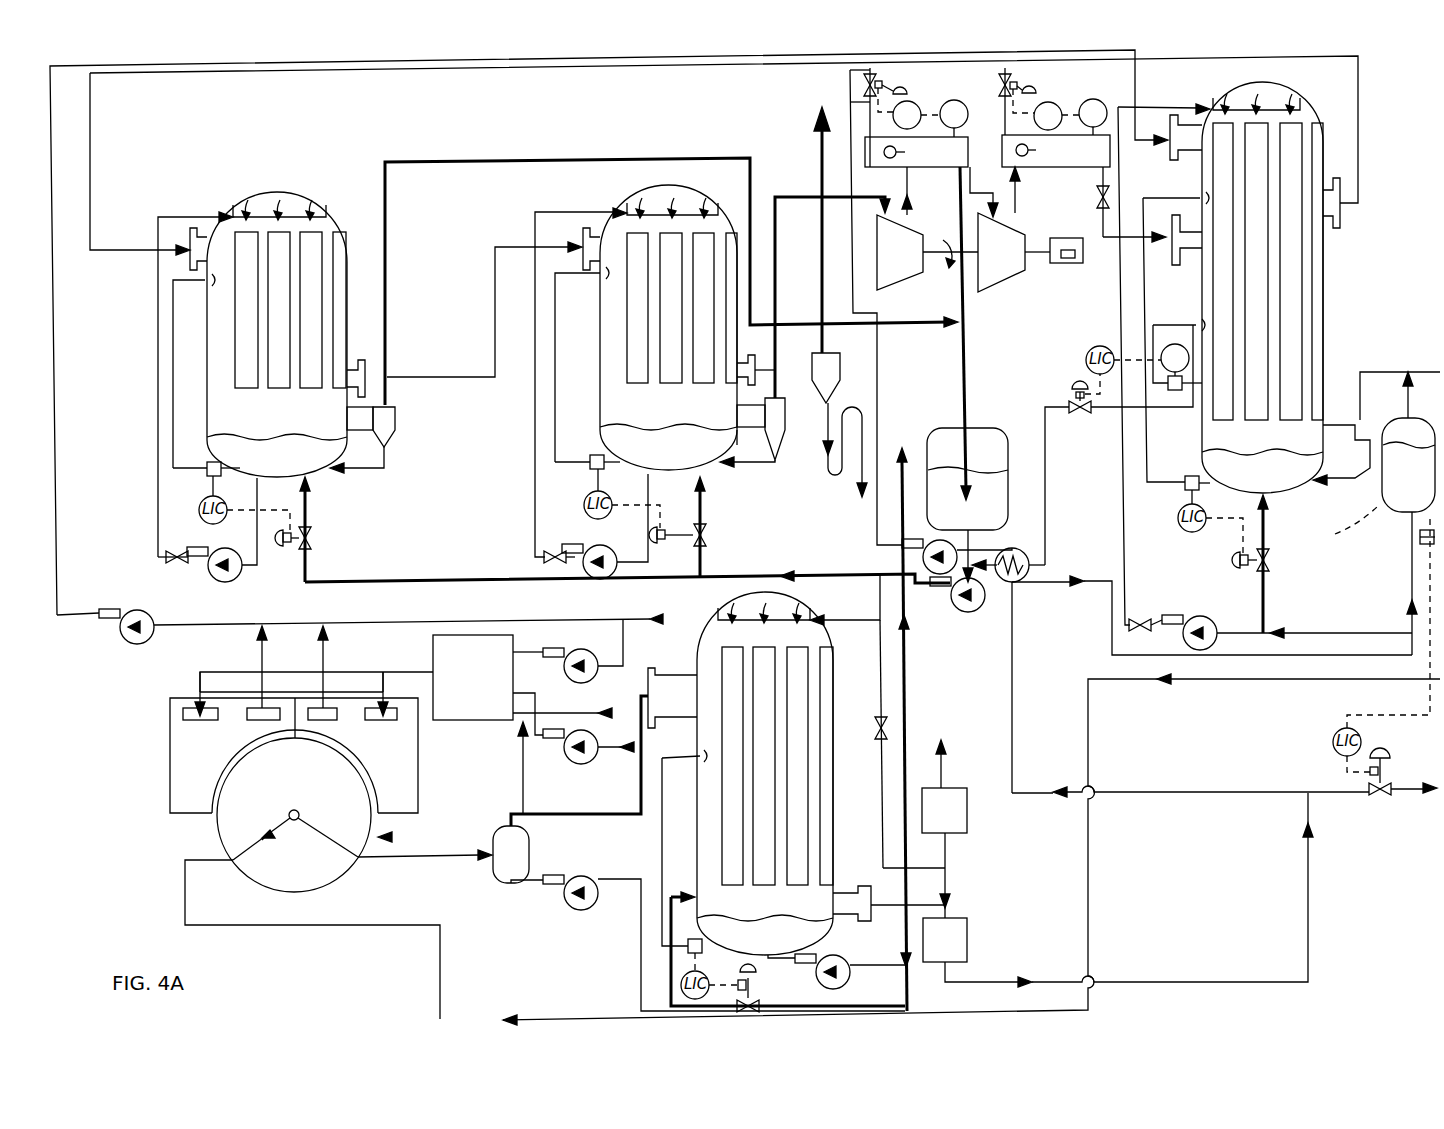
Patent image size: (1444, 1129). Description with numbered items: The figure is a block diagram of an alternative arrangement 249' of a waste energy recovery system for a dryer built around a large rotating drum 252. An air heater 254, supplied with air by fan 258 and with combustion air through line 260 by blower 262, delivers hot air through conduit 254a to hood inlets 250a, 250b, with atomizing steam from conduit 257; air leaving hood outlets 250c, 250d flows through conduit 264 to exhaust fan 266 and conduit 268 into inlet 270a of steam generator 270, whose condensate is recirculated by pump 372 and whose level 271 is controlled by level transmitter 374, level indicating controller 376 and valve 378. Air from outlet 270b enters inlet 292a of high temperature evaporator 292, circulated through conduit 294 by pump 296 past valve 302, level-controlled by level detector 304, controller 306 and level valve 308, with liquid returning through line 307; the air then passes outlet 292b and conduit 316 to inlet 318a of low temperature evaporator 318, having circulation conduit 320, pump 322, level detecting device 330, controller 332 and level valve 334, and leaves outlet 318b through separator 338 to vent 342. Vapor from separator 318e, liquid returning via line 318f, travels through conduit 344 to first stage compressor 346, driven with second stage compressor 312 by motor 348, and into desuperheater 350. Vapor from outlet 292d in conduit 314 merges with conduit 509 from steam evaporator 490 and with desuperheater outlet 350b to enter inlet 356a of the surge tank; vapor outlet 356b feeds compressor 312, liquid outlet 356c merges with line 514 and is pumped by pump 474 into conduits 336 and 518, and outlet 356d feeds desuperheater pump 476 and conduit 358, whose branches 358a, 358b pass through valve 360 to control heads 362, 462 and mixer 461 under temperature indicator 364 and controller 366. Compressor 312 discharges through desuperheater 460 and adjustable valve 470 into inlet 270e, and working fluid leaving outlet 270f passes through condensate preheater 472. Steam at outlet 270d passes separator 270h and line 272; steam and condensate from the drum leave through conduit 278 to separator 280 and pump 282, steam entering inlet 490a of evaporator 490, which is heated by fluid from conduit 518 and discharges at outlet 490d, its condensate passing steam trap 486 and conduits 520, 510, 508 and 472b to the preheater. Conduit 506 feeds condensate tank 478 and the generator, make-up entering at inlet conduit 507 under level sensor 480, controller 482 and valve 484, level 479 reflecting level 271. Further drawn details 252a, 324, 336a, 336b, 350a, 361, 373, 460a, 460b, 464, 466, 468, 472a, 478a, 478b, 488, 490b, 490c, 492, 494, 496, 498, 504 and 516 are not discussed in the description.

The alternative arrangement 249' is at (251, 755).
The hood inlet 250a is at (200, 684).
The hood inlet 250b is at (362, 696).
The hood outlet 250c is at (242, 673).
The hood outlet 250d is at (302, 673).
The rotating drum 252 is at (393, 837).
The drum paddle 252a is at (217, 837).
The air heater 254 is at (478, 722).
The conduit 254a is at (416, 664).
The conduit 257 is at (522, 765).
The fan 258 is at (594, 655).
The combustion air line 260 is at (625, 755).
The blower 262 is at (576, 765).
The conduit 264 is at (223, 625).
The exhaust fan 266 is at (143, 615).
The conduit 268 is at (57, 531).
The steam generator 270 is at (1400, 295).
The steam generator inlet 270a is at (1147, 148).
The air outlet 270b is at (1358, 204).
The steam outlet 270d is at (1345, 403).
The steam generator inlet 270e is at (1157, 245).
The steam generator outlet 270f is at (1190, 410).
The separator 270h is at (1341, 463).
The condensate level 271 is at (1225, 451).
The steam line 272 is at (1289, 682).
The conduit 278 is at (490, 881).
The separator 280 is at (529, 852).
The pump 282 is at (562, 904).
The high temperature evaporator 292 is at (213, 173).
The evaporator inlet 292a is at (170, 255).
The evaporator outlet 292b is at (367, 345).
The outlet opening 292d is at (393, 391).
The circulation conduit 294 is at (155, 485).
The pump 296 is at (232, 582).
The valve 302 is at (170, 562).
The level detector 304 is at (213, 461).
The level indicating controller 306 is at (194, 500).
The line 307 is at (397, 455).
The level valve 308 is at (286, 547).
The second stage vapor compressor 312 is at (998, 293).
The conduit 314 is at (473, 155).
The conduit 316 is at (457, 376).
The low temperature evaporator 318 is at (599, 188).
The inlet opening 318a is at (561, 248).
The outlet opening 318b is at (753, 361).
The separator 318e is at (786, 420).
The line 318f is at (746, 470).
The circulation conduit 320 is at (535, 440).
The pump 322 is at (630, 526).
The valve 324 is at (535, 565).
The level detecting device 330 is at (598, 455).
The level indicating controller 332 is at (578, 498).
The level valve 334 is at (652, 523).
The conduit 336 is at (855, 572).
The liquid line 336a is at (418, 577).
The control valve line 336b is at (716, 538).
The separator 338 is at (839, 368).
The vent 342 is at (816, 144).
The conduit 344 is at (812, 180).
The first stage compressor 346 is at (893, 284).
The motor 348 is at (1067, 264).
The desuperheater 350 is at (928, 196).
The exhaust line 350a is at (865, 174).
The desuperheater outlet 350b is at (1016, 170).
The surge tank inlet 356a is at (961, 426).
The surge tank outlet 356b is at (983, 425).
The surge tank outlet 356c is at (1012, 548).
The surge tank outlet 356d is at (912, 504).
The conduit 358 is at (870, 525).
The branch 358a is at (851, 102).
The branch 358b is at (850, 72).
The valve 360 is at (907, 86).
The heat exchanger 361 is at (962, 170).
The control head 362 is at (870, 151).
The temperature indicator 364 is at (921, 106).
The temperature indicating controller 366 is at (956, 108).
The pump 372 is at (1195, 618).
The valve 373 is at (1143, 618).
The level transmitter 374 is at (1185, 488).
The level indicating controller 376 is at (1180, 540).
The valve 378 is at (1225, 560).
The desuperheater 460 is at (990, 161).
The exhaust line 460a is at (1018, 194).
The exhaust line 460b is at (1100, 212).
The mixer 461 is at (1093, 165).
The control head 462 is at (1015, 152).
The temperature transmitter 464 is at (1097, 99).
The temperature controller 466 is at (1059, 107).
The control valve 468 is at (1037, 80).
The adjustable valve 470 is at (1093, 239).
The condensate preheater 472 is at (1002, 588).
The condensate line 472a is at (1035, 523).
The conduit 472b is at (1014, 665).
The pump 474 is at (990, 614).
The desuperheater pump 476 is at (938, 587).
The condensate tank 478 is at (1395, 515).
The condensate line 478a is at (1388, 395).
The condensate line 478b is at (1407, 545).
The level 479 is at (1361, 482).
The level sensor 480 is at (1407, 600).
The controller 482 is at (1332, 740).
The valve 484 is at (1386, 748).
The steam trap 486 is at (969, 922).
The air relief valve 488 is at (968, 827).
The steam evaporator 490 is at (702, 607).
The inlet 490a is at (645, 697).
The outlet nozzle 490b is at (881, 846).
The inlet line 490c is at (681, 895).
The outlet 490d is at (836, 960).
The level sensor 492 is at (698, 925).
The level controller 494 is at (718, 975).
The control valve 496 is at (752, 987).
The steam line 498 is at (880, 771).
The condensate line 504 is at (1276, 634).
The conduit 506 is at (1304, 656).
The inlet conduit 507 is at (1426, 790).
The conduit 508 is at (1148, 791).
The conduit 509 is at (906, 686).
The conduit 510 is at (1304, 857).
The line 514 is at (1047, 468).
The feed line 516 is at (922, 680).
The conduit 518 is at (880, 593).
The conduit 520 is at (641, 943).